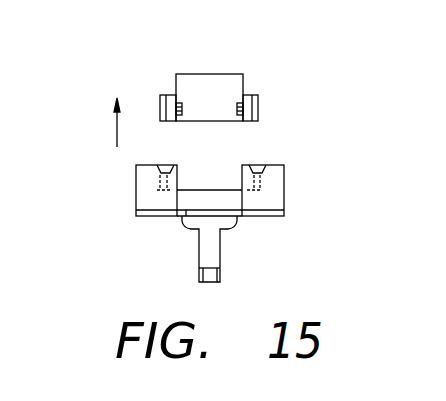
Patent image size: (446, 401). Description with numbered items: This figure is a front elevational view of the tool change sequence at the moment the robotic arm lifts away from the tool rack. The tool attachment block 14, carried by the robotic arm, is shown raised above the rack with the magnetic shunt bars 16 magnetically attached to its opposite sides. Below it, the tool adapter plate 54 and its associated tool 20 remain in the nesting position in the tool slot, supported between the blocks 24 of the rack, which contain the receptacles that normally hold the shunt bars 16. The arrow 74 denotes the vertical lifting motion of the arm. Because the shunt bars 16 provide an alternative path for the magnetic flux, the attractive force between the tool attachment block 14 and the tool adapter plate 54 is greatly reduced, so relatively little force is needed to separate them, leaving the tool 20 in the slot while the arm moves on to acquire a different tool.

The tool attachment block 14 is at (230, 77).
The magnetic shunt bars 16 is at (167, 95).
The arrow 74 is at (113, 115).
The blocks 24 is at (147, 183).
The tool adapter plate 54 is at (200, 203).
The tool 20 is at (212, 250).